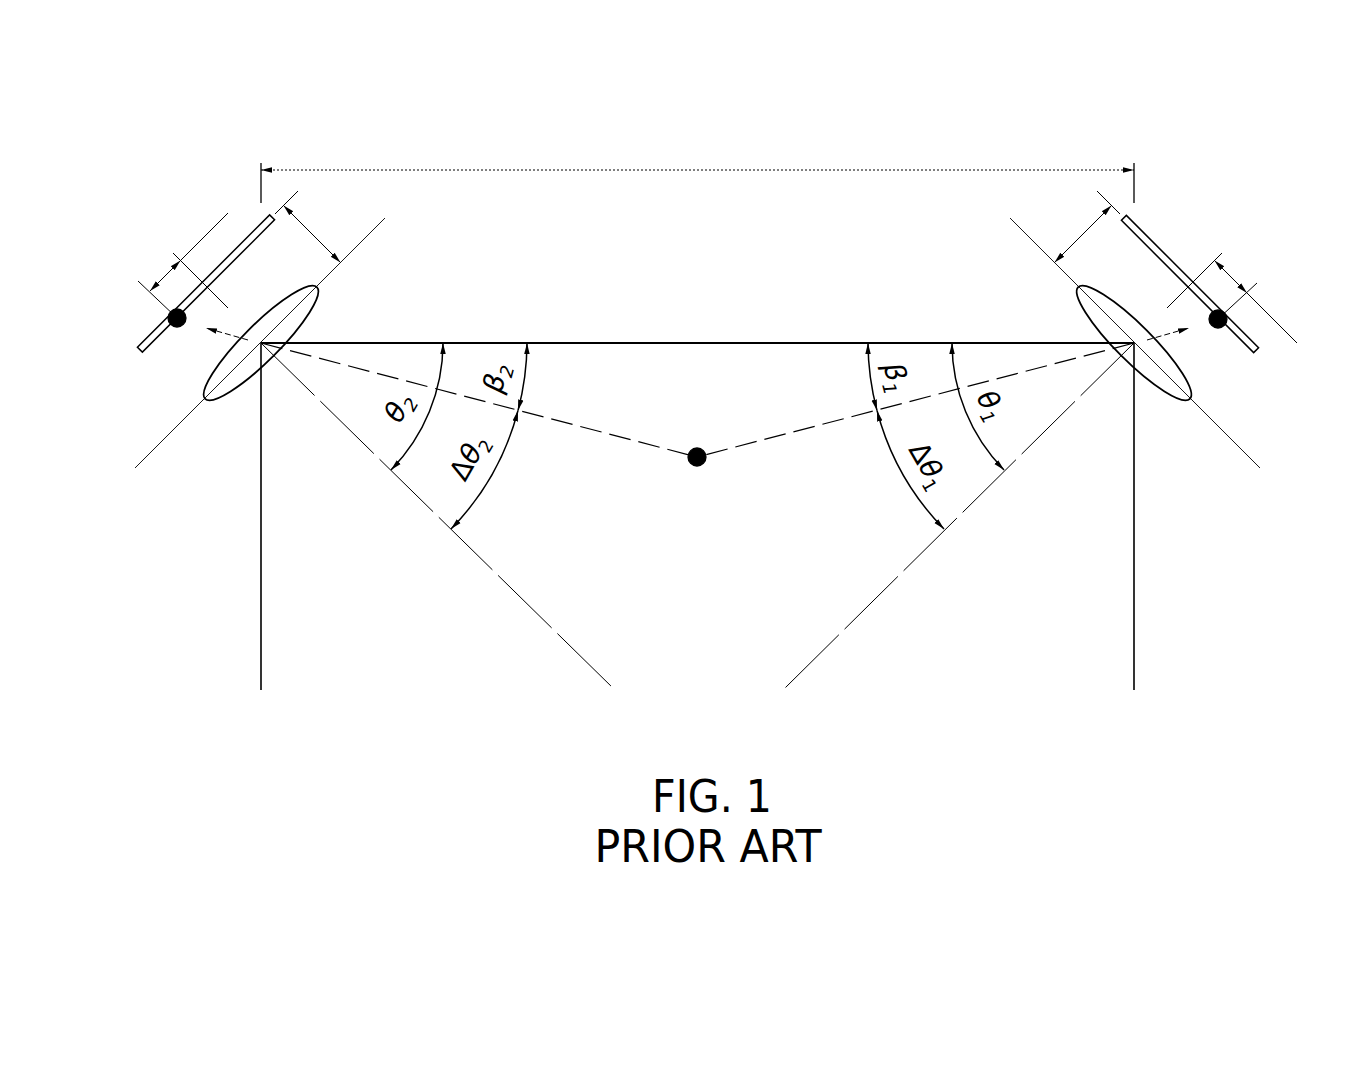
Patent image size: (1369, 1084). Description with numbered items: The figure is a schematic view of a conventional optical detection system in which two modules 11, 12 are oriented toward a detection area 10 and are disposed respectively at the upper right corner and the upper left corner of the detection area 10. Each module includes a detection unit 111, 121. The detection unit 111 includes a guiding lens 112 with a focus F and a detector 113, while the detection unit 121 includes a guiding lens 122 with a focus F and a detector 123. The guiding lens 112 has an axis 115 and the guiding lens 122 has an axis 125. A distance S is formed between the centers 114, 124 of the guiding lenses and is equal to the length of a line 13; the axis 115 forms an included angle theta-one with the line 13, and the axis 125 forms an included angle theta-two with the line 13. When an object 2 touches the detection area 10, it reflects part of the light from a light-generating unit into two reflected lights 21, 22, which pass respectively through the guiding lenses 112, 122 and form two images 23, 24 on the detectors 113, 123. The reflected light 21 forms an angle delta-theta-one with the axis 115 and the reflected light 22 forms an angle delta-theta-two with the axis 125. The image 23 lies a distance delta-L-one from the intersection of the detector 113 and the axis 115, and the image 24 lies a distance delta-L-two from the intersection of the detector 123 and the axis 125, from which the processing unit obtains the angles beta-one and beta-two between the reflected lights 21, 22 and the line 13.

The detection area 10 is at (1018, 697).
The module 11 is at (1075, 405).
The module 12 is at (331, 403).
The line 13 is at (703, 341).
The detection unit 111 is at (1148, 222).
The guiding lens 112 is at (1180, 402).
The detector 113 is at (1257, 352).
The center 114 is at (1157, 382).
The axis 115 is at (883, 597).
The detection unit 121 is at (240, 220).
The guiding lens 122 is at (207, 392).
The detector 123 is at (142, 345).
The center 124 is at (250, 370).
The axis 125 is at (513, 597).
The object 2 is at (697, 468).
The reflected light 21 is at (833, 423).
The reflected light 22 is at (566, 420).
The image 23 is at (1227, 348).
The image 24 is at (167, 318).